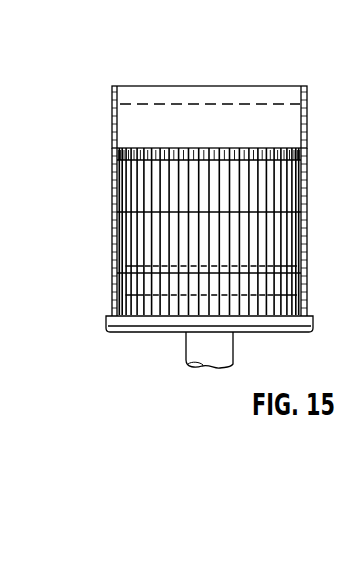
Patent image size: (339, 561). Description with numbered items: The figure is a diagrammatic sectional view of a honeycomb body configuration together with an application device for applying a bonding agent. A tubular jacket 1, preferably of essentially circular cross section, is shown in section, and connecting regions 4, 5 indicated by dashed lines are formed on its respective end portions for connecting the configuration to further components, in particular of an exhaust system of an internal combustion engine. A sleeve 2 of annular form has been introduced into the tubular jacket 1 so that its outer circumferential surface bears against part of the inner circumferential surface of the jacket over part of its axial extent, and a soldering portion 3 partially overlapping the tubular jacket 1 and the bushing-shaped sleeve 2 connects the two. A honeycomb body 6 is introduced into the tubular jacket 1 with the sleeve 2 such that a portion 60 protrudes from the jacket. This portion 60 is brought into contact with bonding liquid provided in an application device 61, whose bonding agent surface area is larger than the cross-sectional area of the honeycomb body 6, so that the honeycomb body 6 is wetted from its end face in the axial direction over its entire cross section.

The tubular jacket 1 is at (112, 127).
The sleeve 2 is at (118, 262).
The soldering portion 3 is at (135, 232).
The connecting region 4 is at (222, 92).
The connecting region 5 is at (150, 288).
The honeycomb body 6 is at (118, 185).
The portion 60 is at (152, 318).
The application device 61 is at (278, 321).